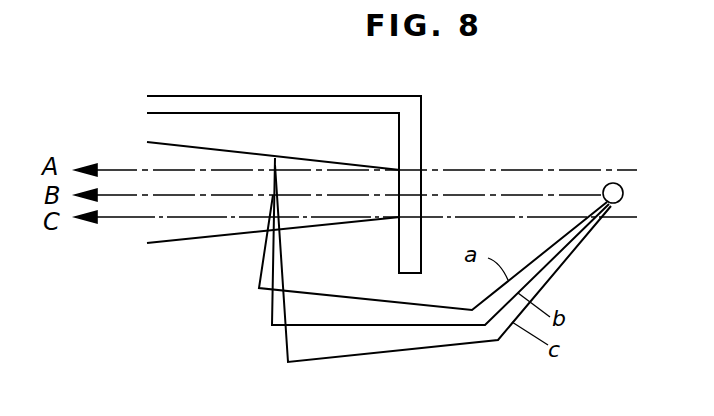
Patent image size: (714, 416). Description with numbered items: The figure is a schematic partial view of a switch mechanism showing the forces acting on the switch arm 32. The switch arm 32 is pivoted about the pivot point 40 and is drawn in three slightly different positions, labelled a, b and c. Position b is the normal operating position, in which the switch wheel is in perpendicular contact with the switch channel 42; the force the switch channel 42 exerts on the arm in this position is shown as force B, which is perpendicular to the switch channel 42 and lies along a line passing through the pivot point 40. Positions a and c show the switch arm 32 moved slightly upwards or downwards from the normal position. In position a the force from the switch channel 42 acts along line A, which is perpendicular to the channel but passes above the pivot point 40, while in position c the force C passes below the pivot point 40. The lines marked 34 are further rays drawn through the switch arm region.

The switch arm 32 is at (402, 302).
The beam rays 34 is at (337, 167).
The pivot point 40 is at (620, 186).
The switch channel 42 is at (421, 142).